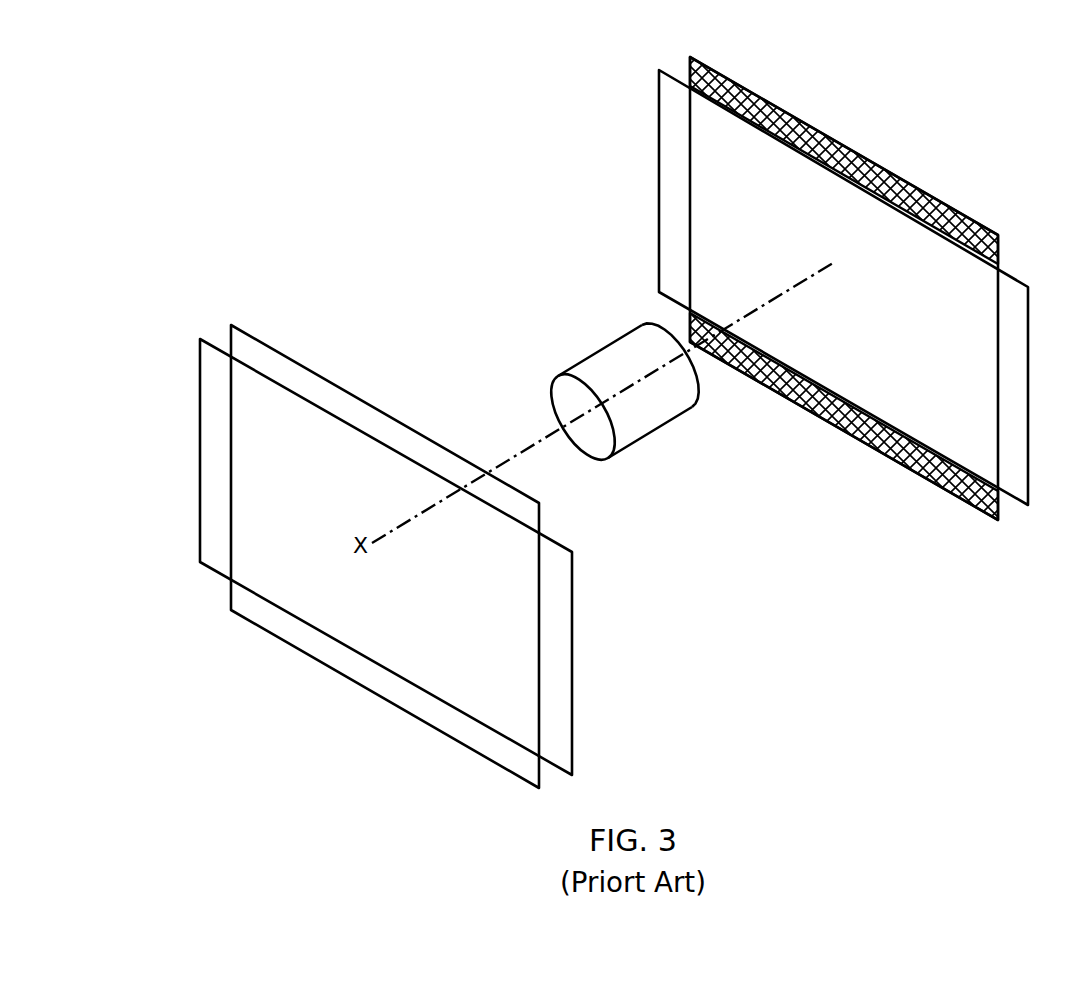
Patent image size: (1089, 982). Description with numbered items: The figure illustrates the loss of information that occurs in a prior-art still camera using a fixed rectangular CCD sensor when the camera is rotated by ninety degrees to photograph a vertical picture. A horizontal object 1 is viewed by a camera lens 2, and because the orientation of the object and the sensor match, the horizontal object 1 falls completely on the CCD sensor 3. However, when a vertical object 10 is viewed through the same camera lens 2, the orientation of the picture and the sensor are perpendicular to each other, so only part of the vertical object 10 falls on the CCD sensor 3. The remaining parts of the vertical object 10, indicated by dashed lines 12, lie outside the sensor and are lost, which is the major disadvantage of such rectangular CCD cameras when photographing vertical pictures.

The horizontal object 1 is at (221, 553).
The vertical object 10 is at (243, 345).
The camera lens 2 is at (590, 370).
The CCD sensor 3 is at (1013, 460).
The dashed lines 12 is at (778, 112).